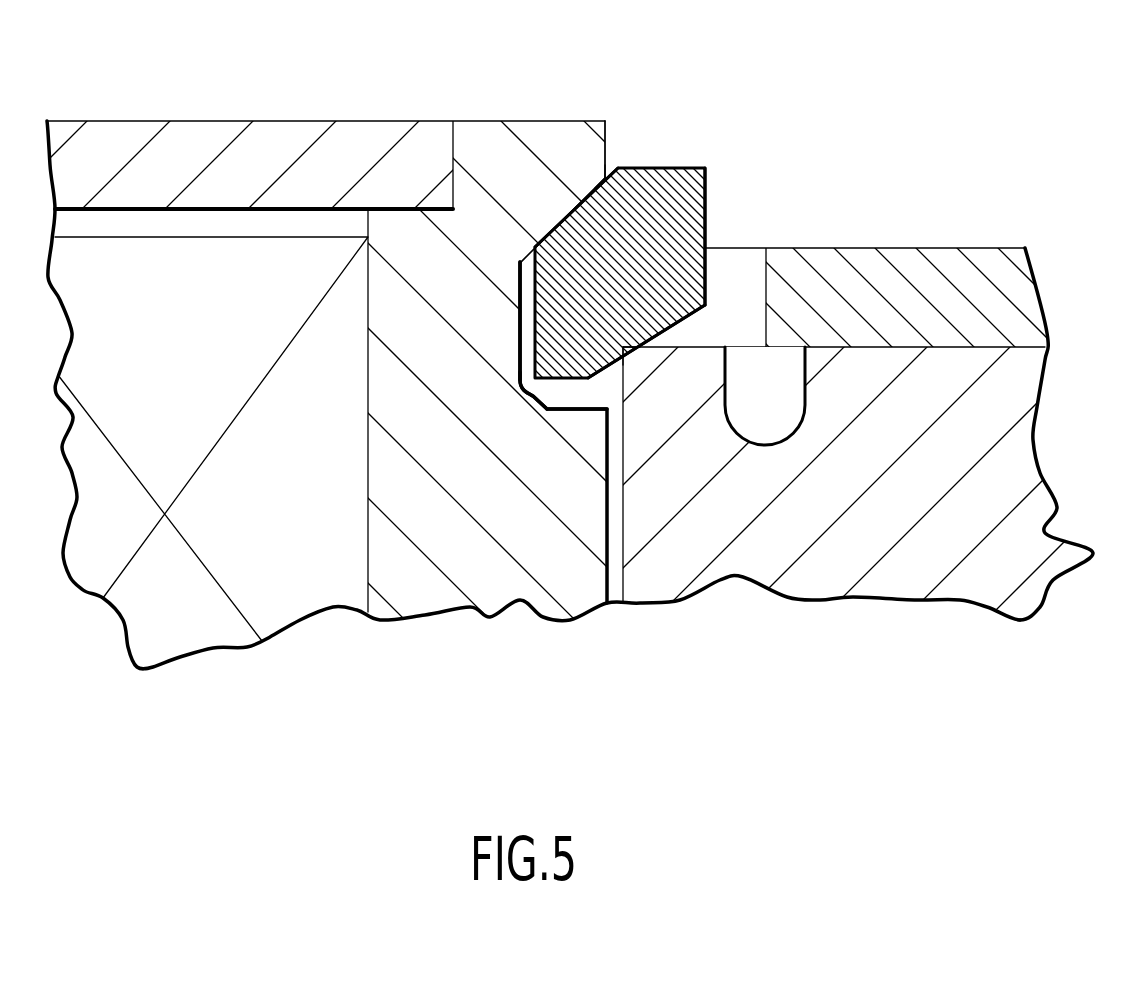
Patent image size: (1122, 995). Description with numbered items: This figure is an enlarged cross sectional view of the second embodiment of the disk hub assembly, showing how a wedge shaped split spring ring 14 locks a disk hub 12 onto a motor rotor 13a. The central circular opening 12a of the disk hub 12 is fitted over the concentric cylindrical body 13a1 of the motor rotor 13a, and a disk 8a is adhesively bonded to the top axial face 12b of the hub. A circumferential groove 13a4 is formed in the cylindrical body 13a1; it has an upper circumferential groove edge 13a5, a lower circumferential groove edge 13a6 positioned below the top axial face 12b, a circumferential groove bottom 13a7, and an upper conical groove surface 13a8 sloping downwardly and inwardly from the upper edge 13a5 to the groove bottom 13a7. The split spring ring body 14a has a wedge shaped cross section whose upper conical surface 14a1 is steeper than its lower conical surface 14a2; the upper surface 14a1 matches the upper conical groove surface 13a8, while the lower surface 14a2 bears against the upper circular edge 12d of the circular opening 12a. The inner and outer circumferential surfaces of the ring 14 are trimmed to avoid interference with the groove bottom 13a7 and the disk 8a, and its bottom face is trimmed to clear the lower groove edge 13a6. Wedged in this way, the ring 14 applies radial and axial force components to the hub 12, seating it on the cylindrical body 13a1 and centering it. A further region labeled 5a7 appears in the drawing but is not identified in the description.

The motor rotor 13a is at (490, 112).
The cylindrical body 13a1 is at (605, 128).
The circumferential groove 13a4 is at (510, 320).
The upper circumferential groove edge 13a5 is at (603, 166).
The lower circumferential groove edge 13a6 is at (577, 405).
The circumferential groove bottom 13a7 is at (521, 386).
The upper conical groove surface 13a8 is at (573, 218).
The split spring ring 14 is at (734, 148).
The split spring ring body 14a is at (707, 217).
The upper conical surface 14a1 is at (533, 246).
The lower conical surface 14a2 is at (663, 337).
The wall portion 5a7 is at (220, 315).
The disk 8a is at (940, 258).
The disk hub 12 is at (963, 583).
The central circular opening 12a is at (612, 603).
The top axial face 12b is at (1022, 341).
The upper circular edge 12d is at (625, 363).